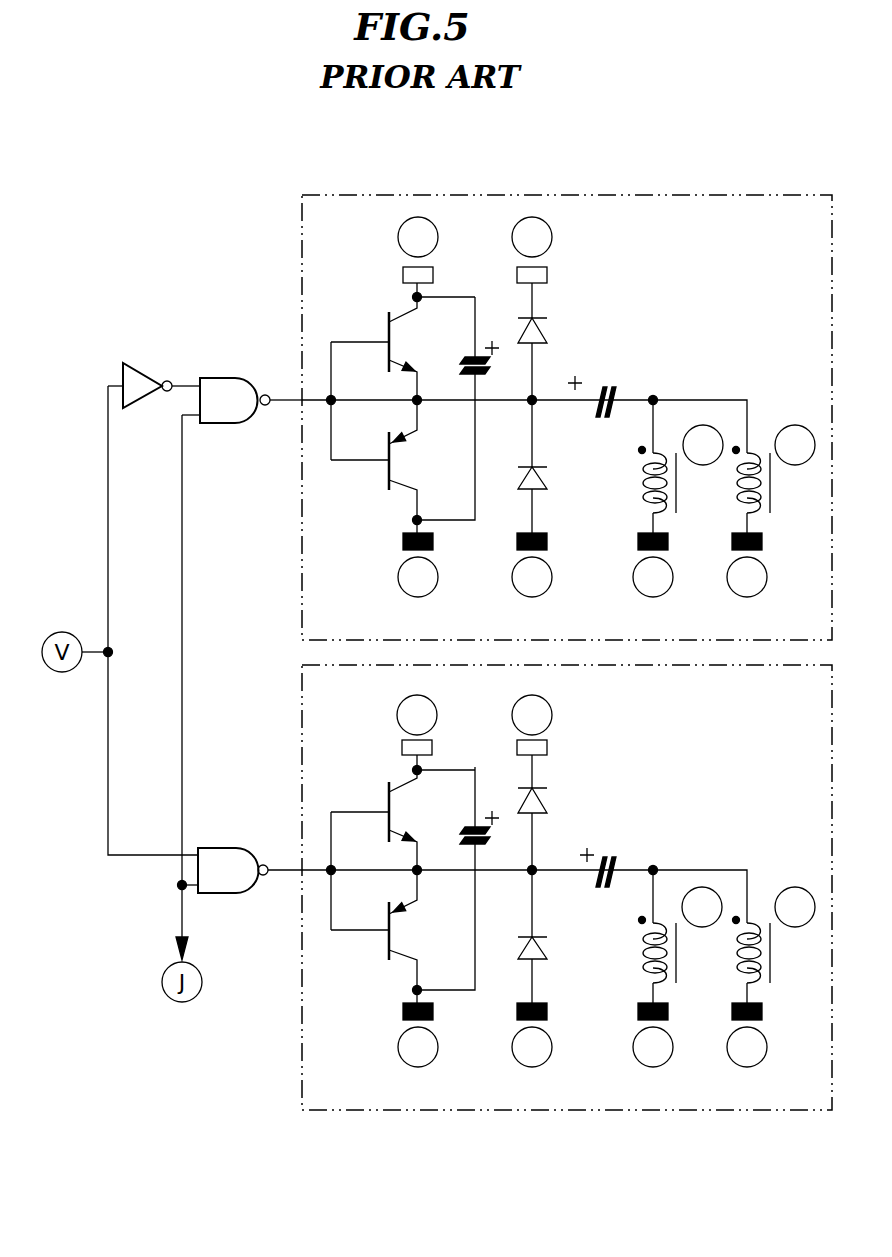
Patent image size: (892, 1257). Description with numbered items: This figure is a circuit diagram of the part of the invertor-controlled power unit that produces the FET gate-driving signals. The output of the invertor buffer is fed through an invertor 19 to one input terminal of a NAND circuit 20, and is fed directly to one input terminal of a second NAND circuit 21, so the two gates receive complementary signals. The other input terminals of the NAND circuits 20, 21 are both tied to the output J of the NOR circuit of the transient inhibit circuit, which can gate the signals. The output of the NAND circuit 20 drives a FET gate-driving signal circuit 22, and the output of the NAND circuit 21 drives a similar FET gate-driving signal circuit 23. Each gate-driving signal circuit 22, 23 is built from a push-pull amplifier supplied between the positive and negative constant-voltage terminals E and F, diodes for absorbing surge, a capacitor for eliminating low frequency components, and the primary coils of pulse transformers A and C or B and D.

The invertor 19 is at (150, 372).
The NAND circuit 20 is at (226, 423).
The NAND circuit 21 is at (224, 848).
The FET gate-driving signal circuit 22 is at (610, 195).
The FET gate-driving signal circuit 23 is at (608, 1110).